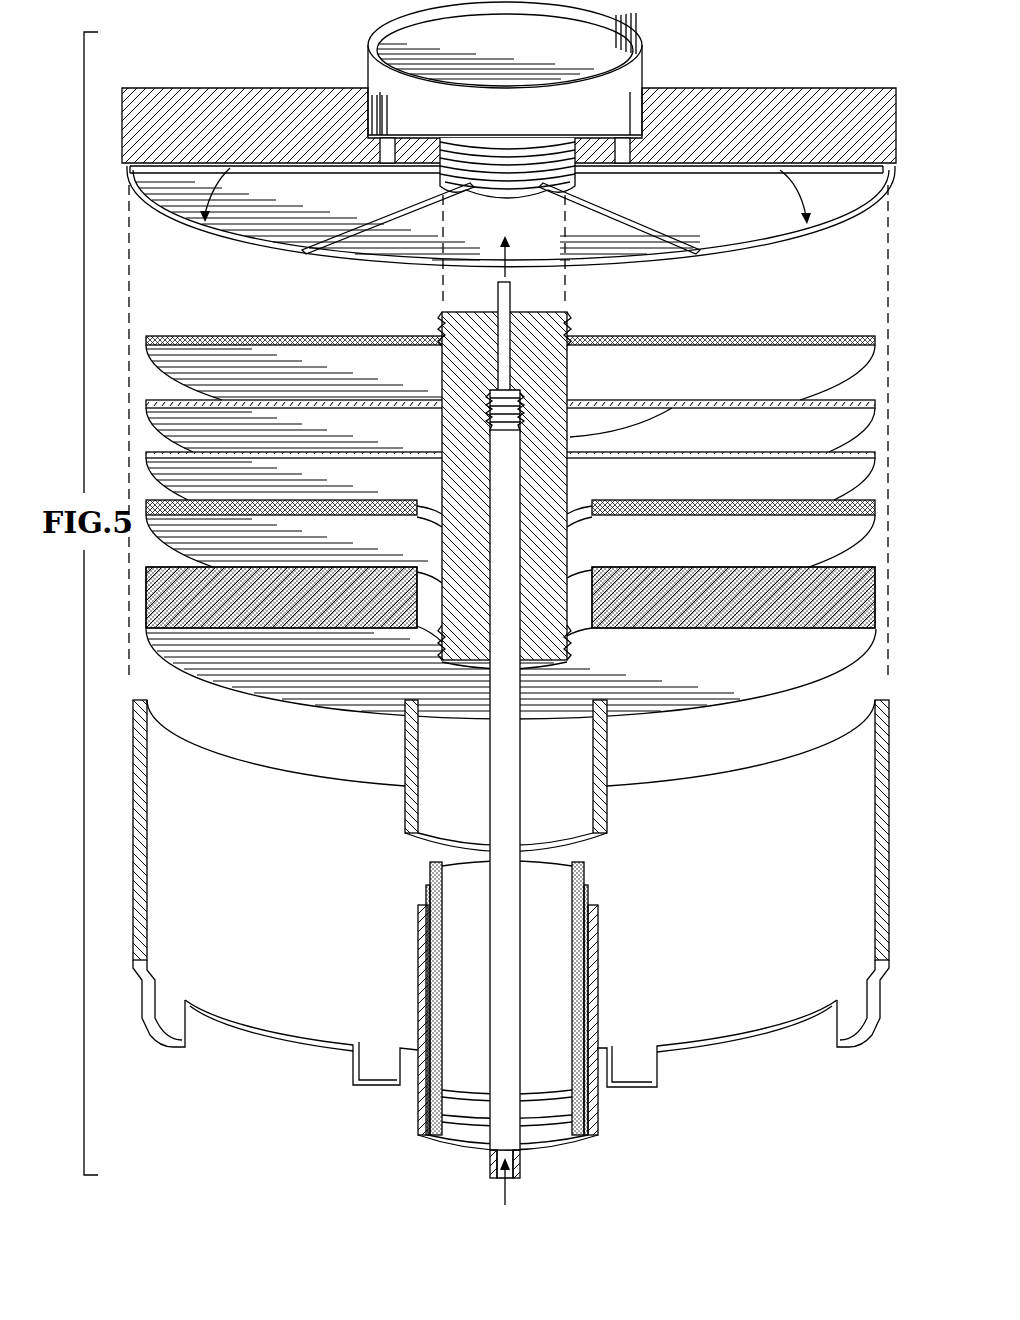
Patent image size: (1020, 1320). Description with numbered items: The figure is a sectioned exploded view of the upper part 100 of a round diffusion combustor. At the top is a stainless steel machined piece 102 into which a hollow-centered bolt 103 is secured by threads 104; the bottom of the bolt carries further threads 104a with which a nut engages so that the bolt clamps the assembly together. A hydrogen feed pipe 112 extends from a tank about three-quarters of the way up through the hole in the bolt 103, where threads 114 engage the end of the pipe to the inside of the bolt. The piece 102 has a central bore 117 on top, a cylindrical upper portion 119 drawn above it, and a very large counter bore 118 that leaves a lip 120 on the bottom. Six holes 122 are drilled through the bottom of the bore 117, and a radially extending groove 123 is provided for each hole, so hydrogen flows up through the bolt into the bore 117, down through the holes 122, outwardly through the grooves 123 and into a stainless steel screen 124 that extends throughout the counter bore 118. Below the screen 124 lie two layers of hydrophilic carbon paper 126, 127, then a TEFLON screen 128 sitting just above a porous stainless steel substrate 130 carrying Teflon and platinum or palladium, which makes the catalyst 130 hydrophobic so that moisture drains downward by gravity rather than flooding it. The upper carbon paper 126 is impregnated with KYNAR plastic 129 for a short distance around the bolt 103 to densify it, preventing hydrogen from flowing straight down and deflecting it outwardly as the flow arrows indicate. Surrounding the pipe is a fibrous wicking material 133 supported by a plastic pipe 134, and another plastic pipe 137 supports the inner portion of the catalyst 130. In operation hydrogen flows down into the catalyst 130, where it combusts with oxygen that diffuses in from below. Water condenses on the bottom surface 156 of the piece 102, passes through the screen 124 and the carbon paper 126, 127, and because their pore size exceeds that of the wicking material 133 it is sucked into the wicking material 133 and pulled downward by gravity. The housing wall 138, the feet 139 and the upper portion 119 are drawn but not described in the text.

The upper part 100 is at (200, 72).
The stainless steel machined piece 102 is at (312, 92).
The hollow-centered bolt 103 is at (432, 312).
The threads 104 is at (499, 153).
The threads 104a is at (564, 664).
The hydrogen feed pipe 112 is at (516, 1141).
The threads 114 is at (521, 400).
The central bore 117 is at (625, 100).
The counter bore 118 is at (753, 257).
The upper cylinder 119 is at (640, 42).
The lip 120 is at (806, 237).
The holes 122 is at (388, 163).
The radially extending groove 123 is at (350, 171).
The stainless steel screen 124 is at (790, 336).
The hydrophilic carbon paper 126 is at (778, 400).
The hydrophilic carbon paper 127 is at (786, 452).
The TEFLON screen 128 is at (778, 500).
The KYNAR plastic 129 is at (645, 420).
The porous stainless steel substrate 130 is at (770, 567).
The wicking material 133 is at (582, 893).
The plastic pipe 134 is at (598, 1010).
The plastic pipe 137 is at (607, 780).
The housing wall 138 is at (873, 752).
The housing feet 139 is at (172, 1015).
The bottom surface 156 is at (637, 247).